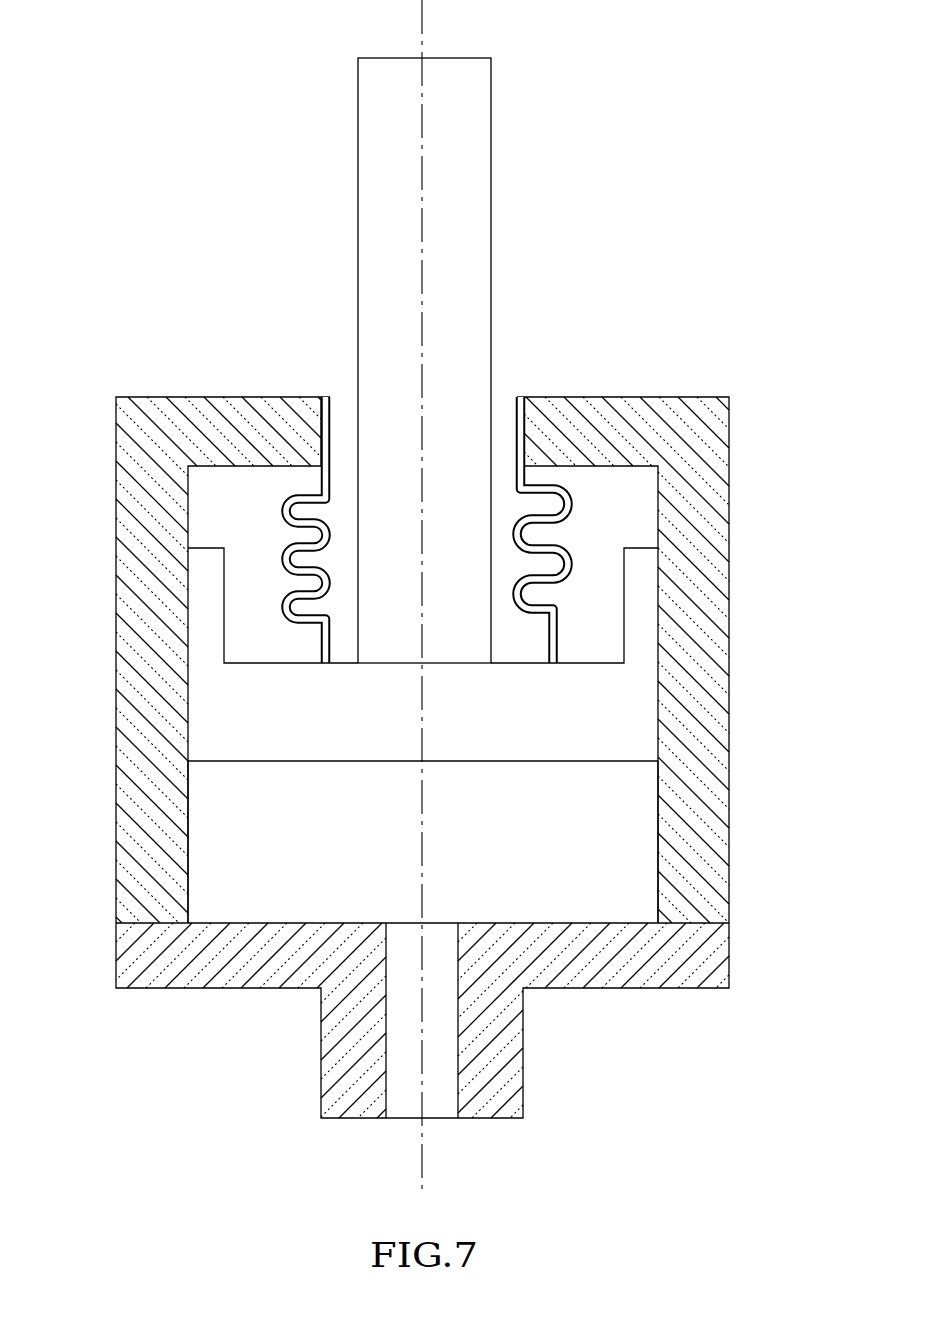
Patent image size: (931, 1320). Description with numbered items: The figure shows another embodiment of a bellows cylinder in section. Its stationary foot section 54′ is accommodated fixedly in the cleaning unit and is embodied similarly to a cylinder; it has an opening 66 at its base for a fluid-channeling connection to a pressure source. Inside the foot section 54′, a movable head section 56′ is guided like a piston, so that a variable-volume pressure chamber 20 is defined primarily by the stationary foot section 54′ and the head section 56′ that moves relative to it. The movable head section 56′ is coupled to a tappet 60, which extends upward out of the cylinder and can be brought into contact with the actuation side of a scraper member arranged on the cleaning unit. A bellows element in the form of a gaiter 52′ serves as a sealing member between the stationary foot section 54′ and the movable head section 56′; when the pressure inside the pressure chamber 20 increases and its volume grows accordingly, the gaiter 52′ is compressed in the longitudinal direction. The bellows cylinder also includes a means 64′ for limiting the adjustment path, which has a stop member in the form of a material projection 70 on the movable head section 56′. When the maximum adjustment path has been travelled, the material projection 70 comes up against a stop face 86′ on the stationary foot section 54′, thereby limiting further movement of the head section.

The pressure chamber 20 is at (623, 848).
The gaiter 52′ is at (574, 512).
The foot section 54′ is at (717, 908).
The head section 56′ is at (607, 712).
The tappet 60 is at (472, 280).
The means for limiting the adjustment path 64′ is at (160, 512).
The opening 66 is at (442, 1095).
The material projection 70 is at (202, 612).
The stop face 86′ is at (251, 478).